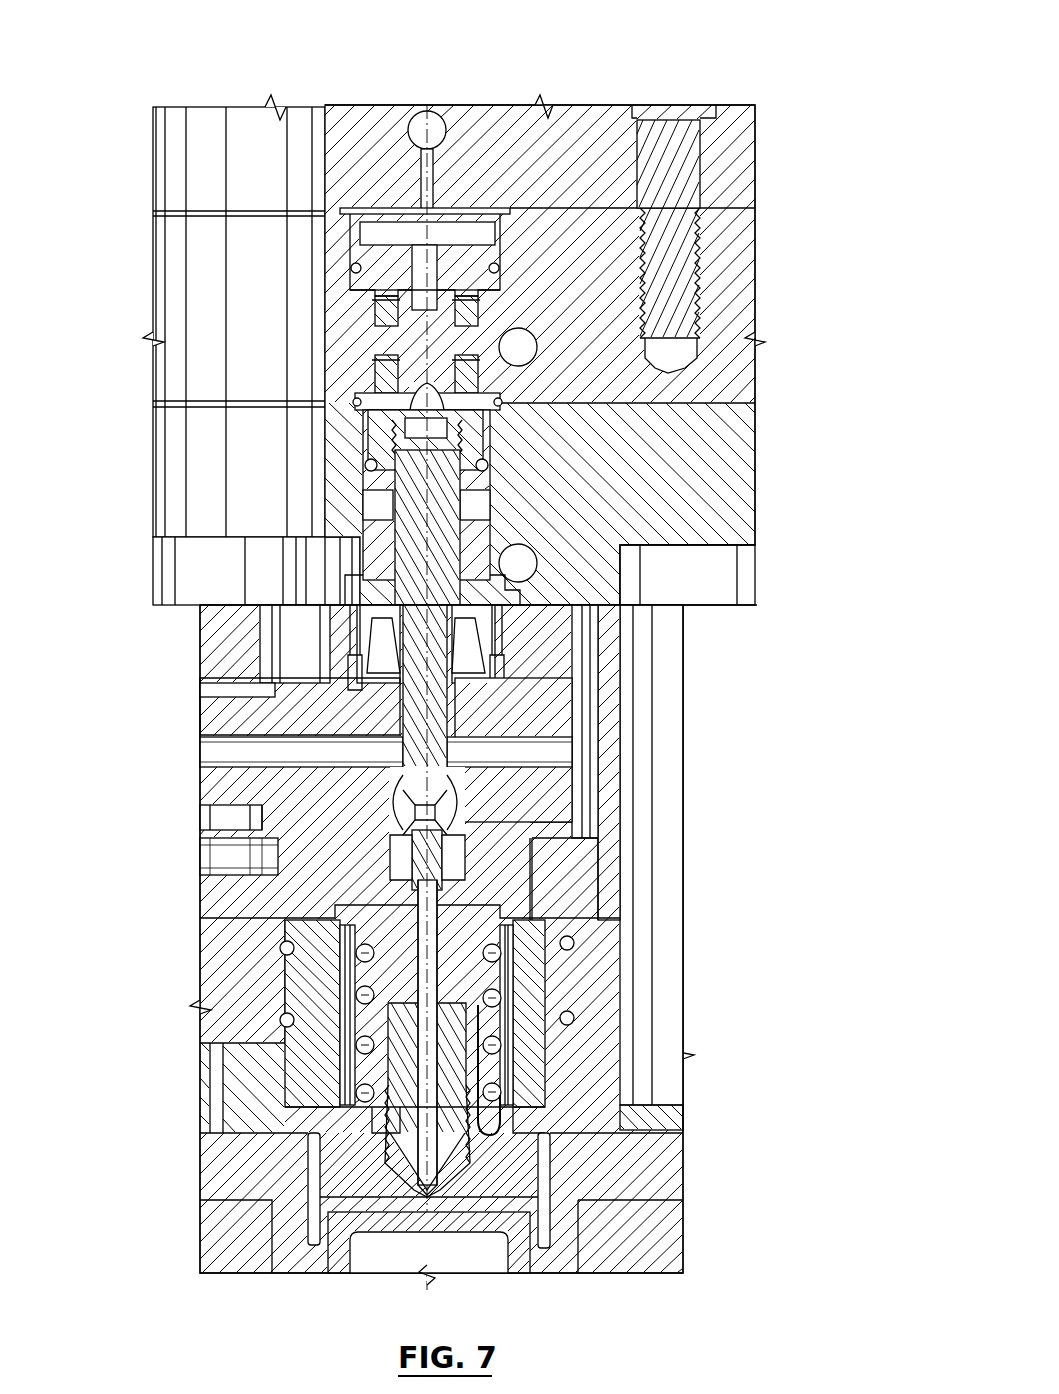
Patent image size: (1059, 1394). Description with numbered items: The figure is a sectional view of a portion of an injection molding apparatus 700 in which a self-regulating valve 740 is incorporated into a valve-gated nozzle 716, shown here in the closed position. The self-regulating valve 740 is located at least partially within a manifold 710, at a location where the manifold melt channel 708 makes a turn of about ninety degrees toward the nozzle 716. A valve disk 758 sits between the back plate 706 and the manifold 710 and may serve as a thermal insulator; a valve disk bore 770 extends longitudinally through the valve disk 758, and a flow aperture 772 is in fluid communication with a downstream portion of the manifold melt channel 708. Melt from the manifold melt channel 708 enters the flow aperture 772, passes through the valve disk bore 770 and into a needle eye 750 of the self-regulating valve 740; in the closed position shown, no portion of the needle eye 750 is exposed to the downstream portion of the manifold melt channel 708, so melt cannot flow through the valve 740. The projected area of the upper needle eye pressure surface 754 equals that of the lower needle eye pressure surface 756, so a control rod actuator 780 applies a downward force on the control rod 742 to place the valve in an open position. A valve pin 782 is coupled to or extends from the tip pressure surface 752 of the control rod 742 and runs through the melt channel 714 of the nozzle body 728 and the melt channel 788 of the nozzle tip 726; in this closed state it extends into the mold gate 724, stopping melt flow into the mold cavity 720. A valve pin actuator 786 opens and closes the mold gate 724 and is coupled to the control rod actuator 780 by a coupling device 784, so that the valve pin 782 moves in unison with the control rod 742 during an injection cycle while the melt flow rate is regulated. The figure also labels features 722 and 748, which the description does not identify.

The injection molding apparatus 700 is at (740, 95).
The back plate 706 is at (161, 460).
The manifold melt channel 708 is at (237, 752).
The manifold 710 is at (557, 702).
The melt channel 714 is at (457, 957).
The valve-gated nozzle 716 is at (450, 937).
The mold cavity 720 is at (215, 1237).
The gate insert 722 is at (540, 1224).
The mold gate 724 is at (430, 1183).
The nozzle tip 726 is at (470, 1090).
The nozzle body 728 is at (440, 985).
The self-regulating valve 740 is at (491, 782).
The control rod 742 is at (362, 492).
The inlet channel 748 is at (415, 851).
The needle eye 750 is at (452, 788).
The tip pressure surface 752 is at (522, 863).
The upper needle eye pressure surface 754 is at (425, 795).
The lower needle eye pressure surface 756 is at (440, 818).
The valve disk 758 is at (358, 633).
The valve disk bore 770 is at (438, 795).
The flow aperture 772 is at (406, 753).
The control rod actuator 780 is at (524, 220).
The valve pin 782 is at (455, 1040).
The coupling device 784 is at (458, 422).
The valve pin actuator 786 is at (496, 487).
The melt channel 788 is at (440, 1138).